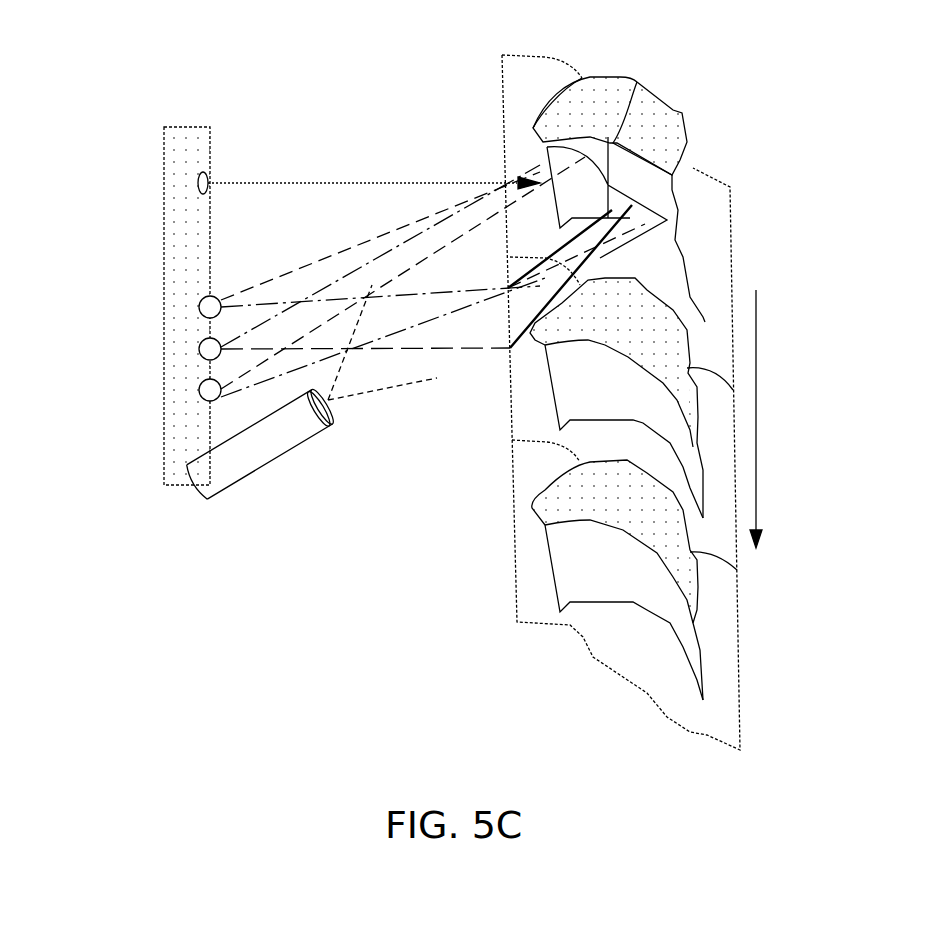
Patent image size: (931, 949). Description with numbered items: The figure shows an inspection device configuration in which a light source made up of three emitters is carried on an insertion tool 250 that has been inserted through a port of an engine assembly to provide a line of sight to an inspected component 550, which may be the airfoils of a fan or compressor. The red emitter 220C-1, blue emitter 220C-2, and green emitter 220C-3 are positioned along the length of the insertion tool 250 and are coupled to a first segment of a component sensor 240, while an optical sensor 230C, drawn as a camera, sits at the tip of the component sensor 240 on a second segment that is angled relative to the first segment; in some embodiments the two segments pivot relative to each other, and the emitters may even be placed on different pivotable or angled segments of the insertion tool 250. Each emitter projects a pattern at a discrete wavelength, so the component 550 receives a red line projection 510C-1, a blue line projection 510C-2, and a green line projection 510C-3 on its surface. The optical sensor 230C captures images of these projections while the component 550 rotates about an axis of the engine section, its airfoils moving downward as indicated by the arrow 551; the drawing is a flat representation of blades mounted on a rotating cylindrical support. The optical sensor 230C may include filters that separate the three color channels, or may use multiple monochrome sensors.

The component sensor 240 is at (197, 183).
The insertion tool 250 is at (165, 235).
The red emitter 220C-1 is at (198, 307).
The blue emitter 220C-2 is at (198, 349).
The green emitter 220C-3 is at (198, 390).
The optical sensor 230C is at (330, 405).
The red line projection 510C-1 is at (637, 82).
The blue line projection 510C-2 is at (692, 142).
The green line projection 510C-3 is at (520, 115).
The inspected component 550 is at (593, 385).
The arrow 551 is at (802, 419).